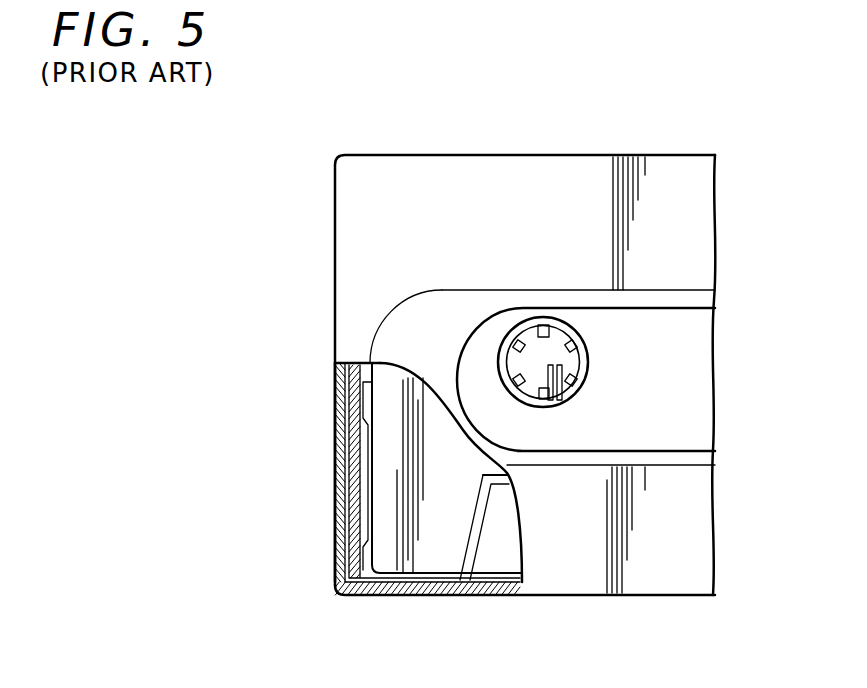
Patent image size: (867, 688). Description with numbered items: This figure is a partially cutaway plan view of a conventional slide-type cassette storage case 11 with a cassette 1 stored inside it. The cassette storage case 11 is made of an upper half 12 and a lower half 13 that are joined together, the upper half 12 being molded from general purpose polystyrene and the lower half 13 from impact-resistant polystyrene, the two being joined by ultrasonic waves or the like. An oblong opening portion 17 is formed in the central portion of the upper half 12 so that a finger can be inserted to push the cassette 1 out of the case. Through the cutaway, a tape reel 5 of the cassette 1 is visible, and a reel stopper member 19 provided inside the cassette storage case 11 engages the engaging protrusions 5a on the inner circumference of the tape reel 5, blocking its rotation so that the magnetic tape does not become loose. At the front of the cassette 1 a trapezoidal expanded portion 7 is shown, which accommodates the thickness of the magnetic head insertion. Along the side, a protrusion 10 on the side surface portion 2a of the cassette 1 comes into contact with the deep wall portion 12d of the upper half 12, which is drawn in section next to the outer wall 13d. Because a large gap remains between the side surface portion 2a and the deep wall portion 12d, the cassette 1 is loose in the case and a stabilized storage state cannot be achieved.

The cassette storage case 11 is at (322, 193).
The upper half 12 is at (358, 277).
The lower half 13 is at (335, 543).
The outer wall of lower rail 13d is at (343, 405).
The deep wall portion 12d is at (353, 436).
The side surface portion 2a is at (342, 377).
The protrusion 10 is at (370, 488).
The opening portion 17 is at (463, 347).
The tape reel 5 is at (543, 325).
The engaging protrusion 5a is at (565, 387).
The reel stopper member 19 is at (549, 365).
The cassette 1 is at (438, 555).
The expanded portion 7 is at (503, 555).